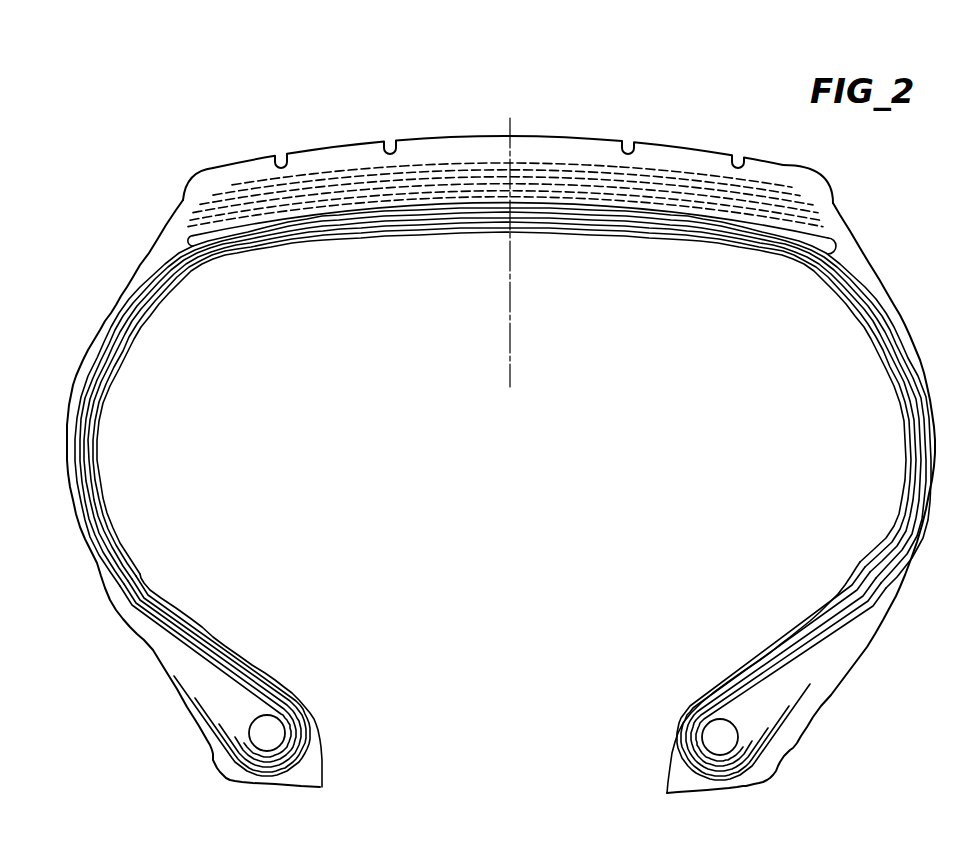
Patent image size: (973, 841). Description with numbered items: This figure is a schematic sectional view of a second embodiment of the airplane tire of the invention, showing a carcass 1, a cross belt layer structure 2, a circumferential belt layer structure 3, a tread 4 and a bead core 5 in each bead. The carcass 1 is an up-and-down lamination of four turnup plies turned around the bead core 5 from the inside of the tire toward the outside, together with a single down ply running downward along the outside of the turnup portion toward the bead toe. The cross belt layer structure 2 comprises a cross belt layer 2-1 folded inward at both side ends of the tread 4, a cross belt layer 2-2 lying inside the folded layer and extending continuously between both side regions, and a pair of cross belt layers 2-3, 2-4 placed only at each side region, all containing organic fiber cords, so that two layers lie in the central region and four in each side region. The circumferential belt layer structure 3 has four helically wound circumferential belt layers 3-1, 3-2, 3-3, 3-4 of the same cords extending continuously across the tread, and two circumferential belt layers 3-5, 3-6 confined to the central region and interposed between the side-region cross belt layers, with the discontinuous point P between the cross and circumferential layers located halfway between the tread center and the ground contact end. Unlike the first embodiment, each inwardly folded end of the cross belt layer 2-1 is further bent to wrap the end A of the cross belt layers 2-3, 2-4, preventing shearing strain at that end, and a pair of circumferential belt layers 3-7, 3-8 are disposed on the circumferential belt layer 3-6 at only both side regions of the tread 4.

The carcass 1 is at (83, 450).
The cross belt layer structure 2 is at (503, 491).
The cross belt layer 2-1 is at (220, 240).
The cross belt layer 2-2 is at (248, 232).
The cross belt layer 2-3 is at (293, 218).
The cross belt layer 2-4 is at (777, 230).
The circumferential belt layer structure 3 is at (472, 214).
The circumferential belt layer 3-1 is at (407, 203).
The circumferential belt layer 3-2 is at (433, 197).
The circumferential belt layer 3-3 is at (462, 188).
The circumferential belt layer 3-4 is at (523, 178).
The circumferential belt layer 3-5 is at (550, 172).
The circumferential belt layer 3-6 is at (587, 167).
The circumferential belt layer 3-7 is at (243, 185).
The circumferential belt layer 3-8 is at (785, 192).
The tread 4 is at (680, 152).
The bead core 5 is at (272, 730).
The discontinuous point P is at (372, 197).
The end of cross belt layer A is at (660, 203).